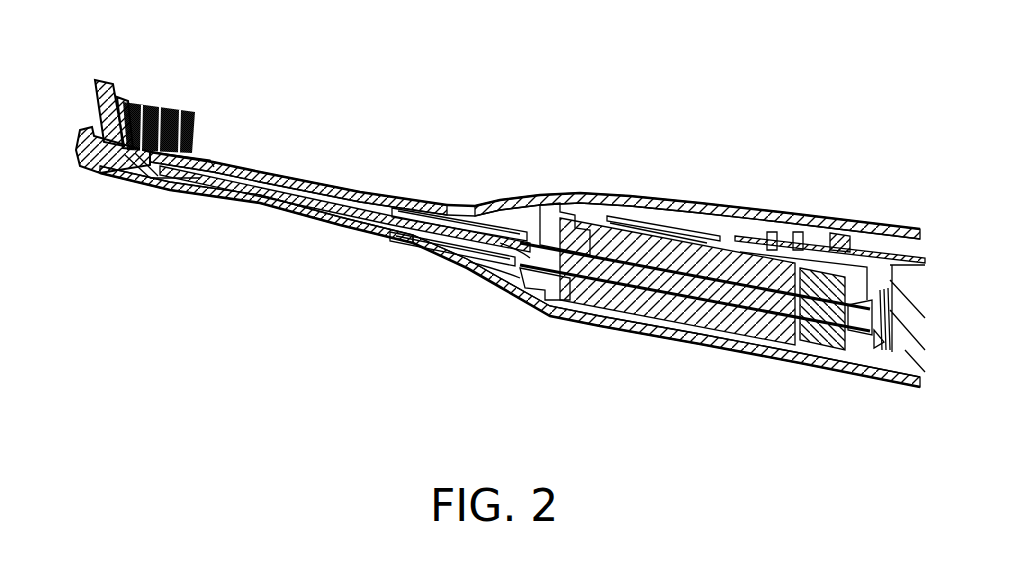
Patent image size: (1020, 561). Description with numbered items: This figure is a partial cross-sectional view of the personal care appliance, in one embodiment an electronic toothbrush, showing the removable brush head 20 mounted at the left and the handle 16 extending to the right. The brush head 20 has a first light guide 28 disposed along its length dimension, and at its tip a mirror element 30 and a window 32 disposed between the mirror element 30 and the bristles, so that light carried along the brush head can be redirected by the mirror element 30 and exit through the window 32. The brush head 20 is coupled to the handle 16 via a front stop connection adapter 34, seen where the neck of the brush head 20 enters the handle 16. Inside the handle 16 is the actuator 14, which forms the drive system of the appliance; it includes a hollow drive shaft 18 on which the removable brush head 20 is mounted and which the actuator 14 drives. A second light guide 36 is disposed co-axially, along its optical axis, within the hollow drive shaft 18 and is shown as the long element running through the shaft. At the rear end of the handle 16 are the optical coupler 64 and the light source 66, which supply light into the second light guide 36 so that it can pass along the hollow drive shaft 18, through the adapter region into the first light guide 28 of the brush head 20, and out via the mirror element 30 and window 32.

The actuator 14 is at (727, 268).
The handle 16 is at (634, 193).
The hollow drive shaft 18 is at (737, 305).
The brush head 20 is at (321, 175).
The first light guide 28 is at (272, 182).
The mirror element 30 is at (144, 183).
The window 32 is at (138, 150).
The front stop connection adapter 34 is at (462, 220).
The second light guide 36 is at (678, 287).
The optical coupler 64 is at (876, 310).
The light source 66 is at (877, 347).